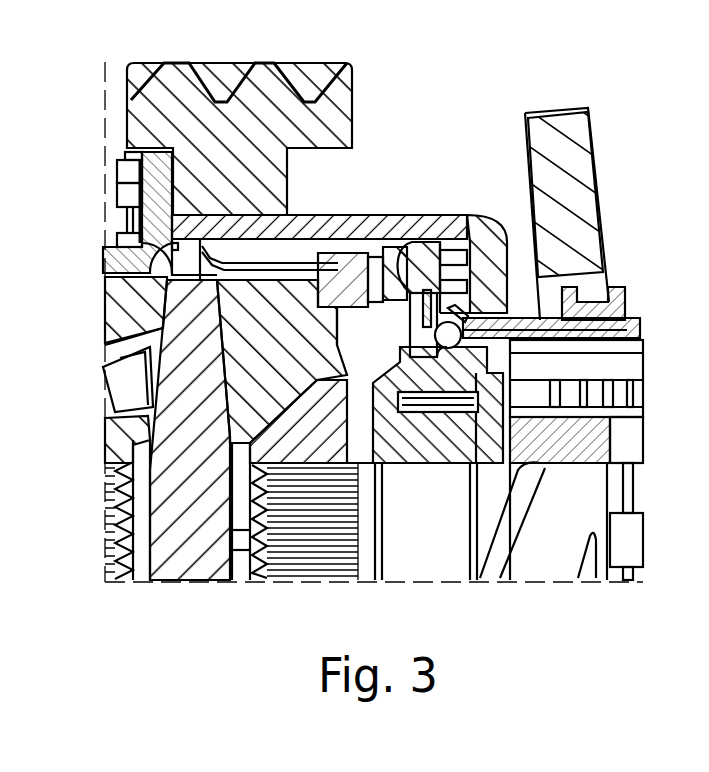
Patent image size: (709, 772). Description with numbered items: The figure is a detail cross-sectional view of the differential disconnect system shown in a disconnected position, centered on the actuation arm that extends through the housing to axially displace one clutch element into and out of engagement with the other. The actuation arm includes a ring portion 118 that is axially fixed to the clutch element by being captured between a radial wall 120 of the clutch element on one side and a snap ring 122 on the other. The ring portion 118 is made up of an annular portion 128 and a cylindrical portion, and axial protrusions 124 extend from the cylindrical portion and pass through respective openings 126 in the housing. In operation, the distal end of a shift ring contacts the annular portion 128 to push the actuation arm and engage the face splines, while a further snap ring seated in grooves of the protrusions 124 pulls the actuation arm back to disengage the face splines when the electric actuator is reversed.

The ring portion 118 is at (420, 356).
The radial wall 120 is at (393, 283).
The snap ring 122 is at (432, 290).
The axial protrusions 124 is at (550, 367).
The openings 126 is at (508, 325).
The annular portion 128 is at (408, 310).